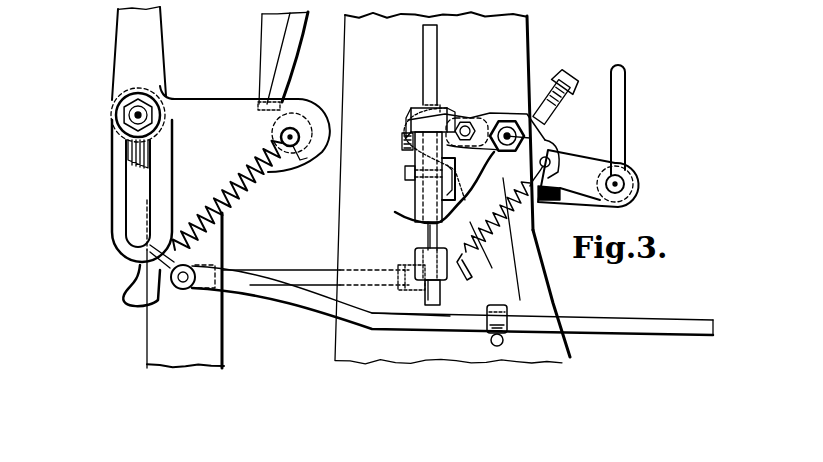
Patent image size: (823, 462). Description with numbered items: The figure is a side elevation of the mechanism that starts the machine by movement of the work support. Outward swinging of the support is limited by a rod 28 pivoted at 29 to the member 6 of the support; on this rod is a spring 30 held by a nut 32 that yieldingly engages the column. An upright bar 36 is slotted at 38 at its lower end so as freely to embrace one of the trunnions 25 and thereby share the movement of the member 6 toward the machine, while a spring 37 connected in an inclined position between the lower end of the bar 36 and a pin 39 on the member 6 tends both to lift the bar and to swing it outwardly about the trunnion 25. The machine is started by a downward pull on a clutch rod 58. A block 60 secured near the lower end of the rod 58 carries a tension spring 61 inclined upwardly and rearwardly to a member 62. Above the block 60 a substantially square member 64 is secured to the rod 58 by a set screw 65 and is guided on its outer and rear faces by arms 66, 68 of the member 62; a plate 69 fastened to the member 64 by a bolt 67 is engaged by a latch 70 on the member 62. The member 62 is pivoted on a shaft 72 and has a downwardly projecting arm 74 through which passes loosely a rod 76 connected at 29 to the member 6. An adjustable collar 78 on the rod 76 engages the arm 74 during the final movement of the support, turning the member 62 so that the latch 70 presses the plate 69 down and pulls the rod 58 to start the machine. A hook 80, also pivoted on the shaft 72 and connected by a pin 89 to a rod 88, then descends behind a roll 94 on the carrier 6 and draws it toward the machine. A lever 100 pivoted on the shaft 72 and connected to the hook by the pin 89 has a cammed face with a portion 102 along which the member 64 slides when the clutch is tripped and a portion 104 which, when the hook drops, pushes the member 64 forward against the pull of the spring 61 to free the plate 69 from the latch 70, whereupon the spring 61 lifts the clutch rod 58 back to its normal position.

The member 6 is at (183, 363).
The trunnion 25 is at (138, 115).
The rod 28 is at (288, 270).
The pivot 29 is at (186, 286).
The spring 30 is at (410, 290).
The nut 32 is at (430, 306).
The upright bar 36 is at (152, 40).
The spring 37 is at (248, 182).
The slot 38 is at (130, 232).
The pin 39 is at (292, 150).
The clutch rod 58 is at (424, 62).
The block 60 is at (416, 259).
The tension spring 61 is at (489, 264).
The member 62 is at (504, 118).
The member 64 is at (417, 211).
The set screw 65 is at (404, 143).
The arm 66 is at (414, 126).
The bolt 67 is at (406, 176).
The arm 68 is at (436, 237).
The plate 69 is at (445, 181).
The latch 70 is at (465, 120).
The shaft 72 is at (548, 158).
The arm 74 is at (517, 260).
The rod 76 is at (447, 326).
The adjustable collar 78 is at (505, 322).
The hook 80 is at (280, 82).
The rod 88 is at (620, 137).
The pin 89 is at (633, 192).
The roll 94 is at (305, 125).
The lever 100 is at (607, 197).
The portion 102 is at (418, 108).
The portion 104 is at (447, 108).